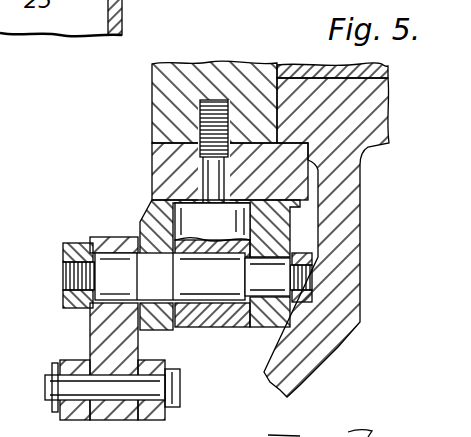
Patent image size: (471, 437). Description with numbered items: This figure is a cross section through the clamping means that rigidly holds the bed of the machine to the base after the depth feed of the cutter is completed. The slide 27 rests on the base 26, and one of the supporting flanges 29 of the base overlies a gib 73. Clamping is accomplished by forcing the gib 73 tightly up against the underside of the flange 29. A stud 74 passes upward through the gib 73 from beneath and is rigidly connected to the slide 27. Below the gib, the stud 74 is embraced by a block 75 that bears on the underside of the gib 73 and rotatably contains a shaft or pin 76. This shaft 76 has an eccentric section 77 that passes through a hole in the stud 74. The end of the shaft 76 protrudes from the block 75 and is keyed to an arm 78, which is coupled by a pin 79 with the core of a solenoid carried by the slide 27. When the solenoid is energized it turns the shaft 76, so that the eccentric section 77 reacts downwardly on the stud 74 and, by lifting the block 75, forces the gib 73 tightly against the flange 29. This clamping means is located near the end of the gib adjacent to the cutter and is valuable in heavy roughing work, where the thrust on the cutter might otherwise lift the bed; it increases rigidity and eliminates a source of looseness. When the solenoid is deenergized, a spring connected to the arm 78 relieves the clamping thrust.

The base 26 is at (348, 306).
The slide 27 is at (167, 95).
The supporting flange 29 is at (290, 97).
The gib 73 is at (160, 157).
The stud 74 is at (183, 215).
The block 75 is at (145, 223).
The shaft 76 is at (242, 302).
The eccentric section 77 is at (262, 310).
The arm 78 is at (95, 327).
The pin 79 is at (55, 385).